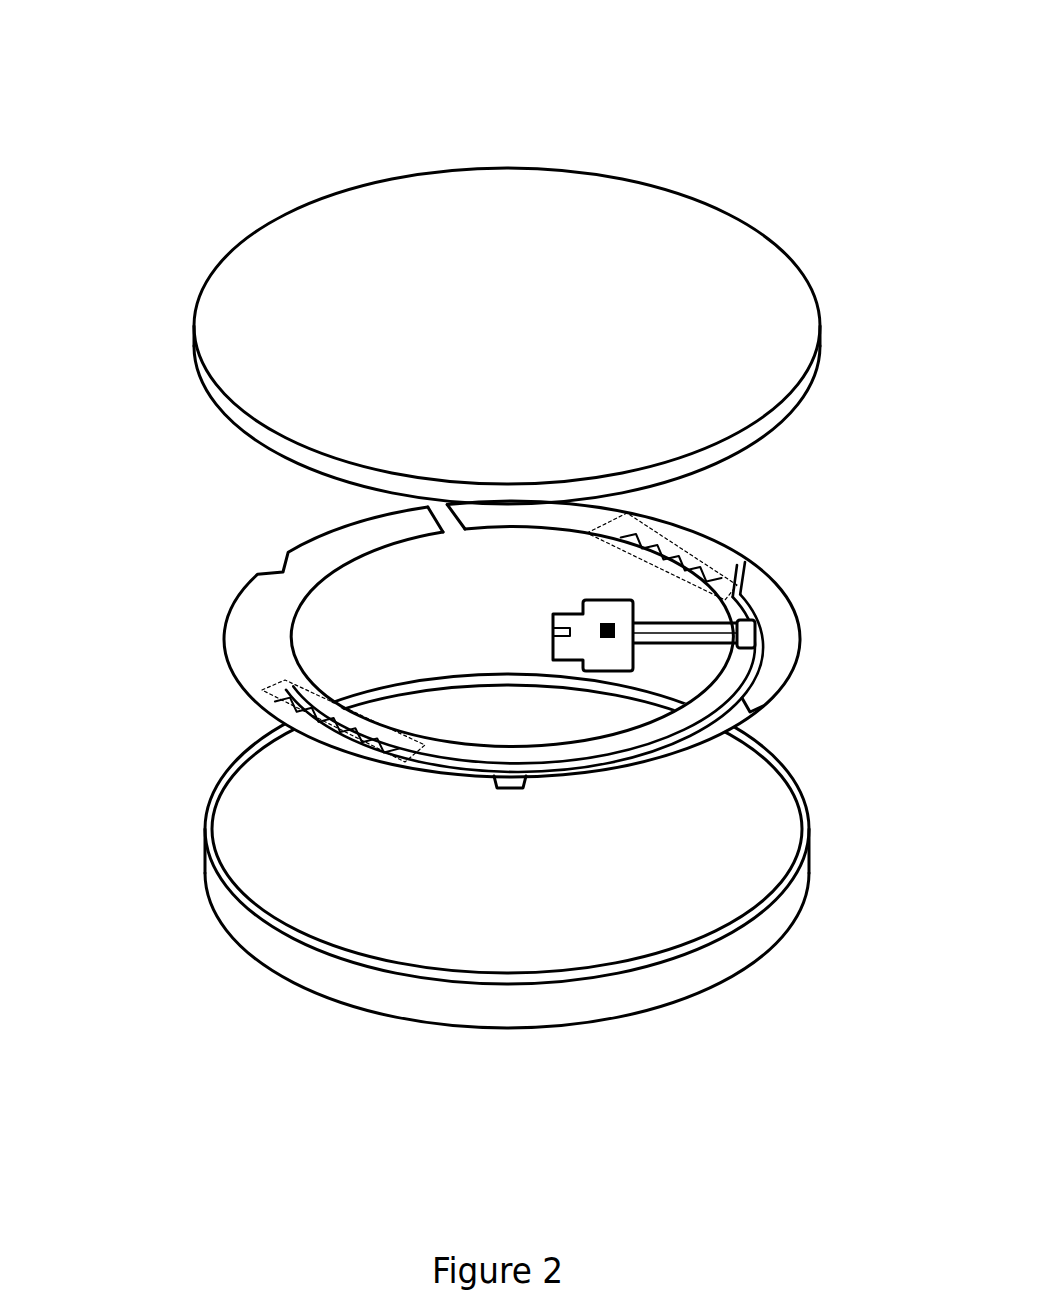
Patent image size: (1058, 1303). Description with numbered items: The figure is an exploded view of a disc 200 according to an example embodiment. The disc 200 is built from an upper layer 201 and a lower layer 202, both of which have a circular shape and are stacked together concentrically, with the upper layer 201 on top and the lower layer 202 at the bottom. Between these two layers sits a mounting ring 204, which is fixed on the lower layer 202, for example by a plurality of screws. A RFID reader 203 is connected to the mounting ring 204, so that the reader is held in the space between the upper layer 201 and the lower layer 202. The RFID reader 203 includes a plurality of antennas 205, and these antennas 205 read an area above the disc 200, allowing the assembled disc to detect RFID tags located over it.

The disc 200 is at (272, 84).
The upper layer 201 is at (668, 325).
The lower layer 202 is at (662, 917).
The RFID reader 203 is at (610, 628).
The mounting ring 204 is at (305, 537).
The antennas 205 is at (270, 705).